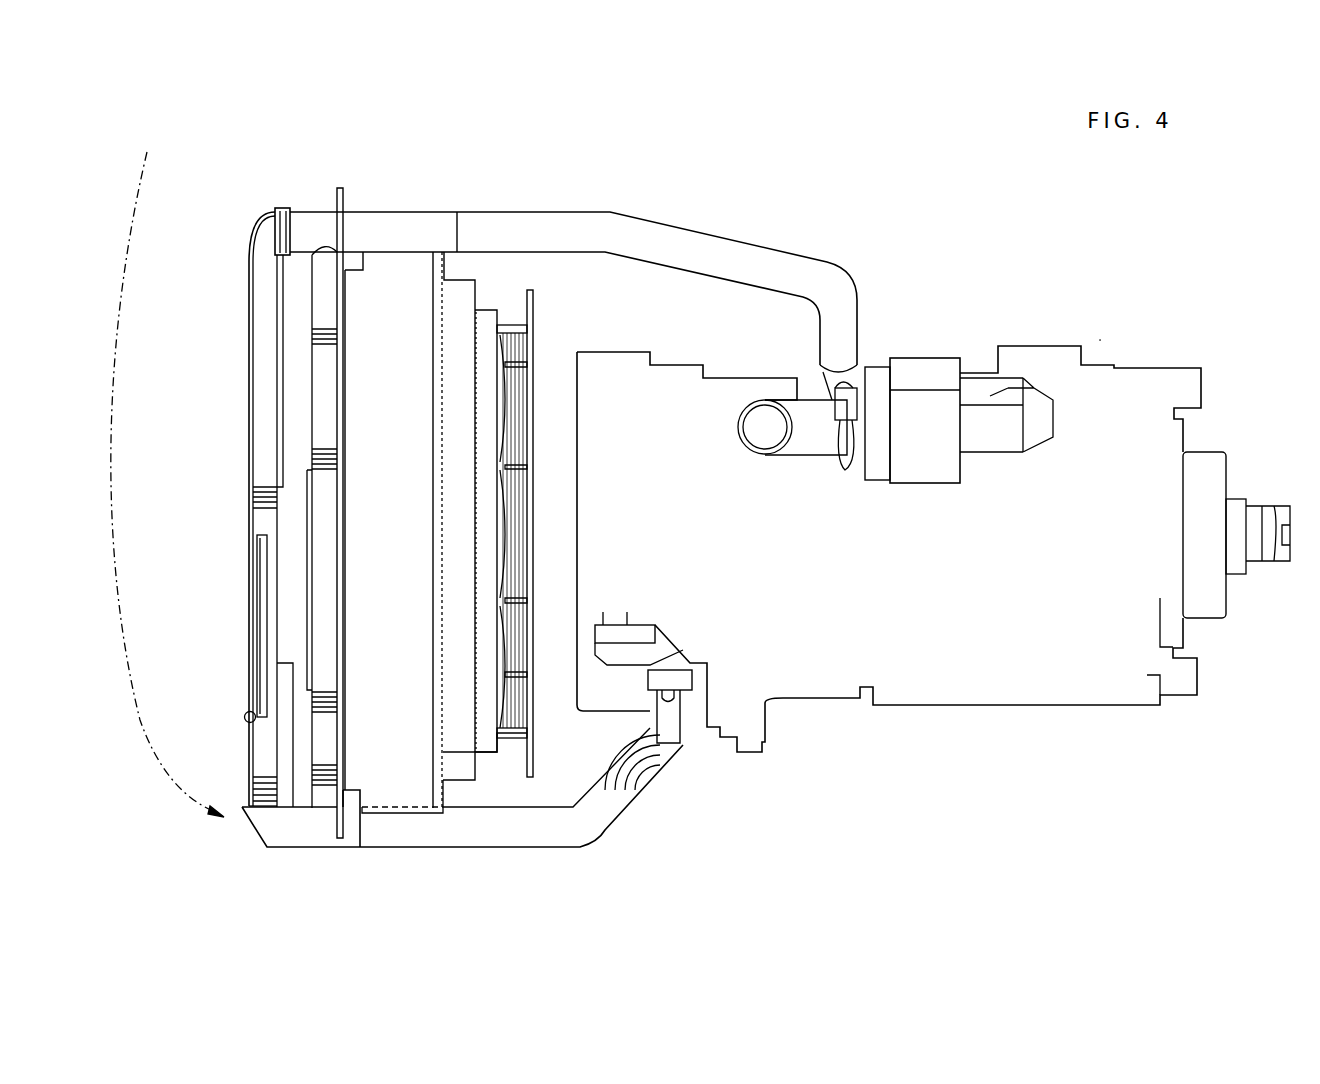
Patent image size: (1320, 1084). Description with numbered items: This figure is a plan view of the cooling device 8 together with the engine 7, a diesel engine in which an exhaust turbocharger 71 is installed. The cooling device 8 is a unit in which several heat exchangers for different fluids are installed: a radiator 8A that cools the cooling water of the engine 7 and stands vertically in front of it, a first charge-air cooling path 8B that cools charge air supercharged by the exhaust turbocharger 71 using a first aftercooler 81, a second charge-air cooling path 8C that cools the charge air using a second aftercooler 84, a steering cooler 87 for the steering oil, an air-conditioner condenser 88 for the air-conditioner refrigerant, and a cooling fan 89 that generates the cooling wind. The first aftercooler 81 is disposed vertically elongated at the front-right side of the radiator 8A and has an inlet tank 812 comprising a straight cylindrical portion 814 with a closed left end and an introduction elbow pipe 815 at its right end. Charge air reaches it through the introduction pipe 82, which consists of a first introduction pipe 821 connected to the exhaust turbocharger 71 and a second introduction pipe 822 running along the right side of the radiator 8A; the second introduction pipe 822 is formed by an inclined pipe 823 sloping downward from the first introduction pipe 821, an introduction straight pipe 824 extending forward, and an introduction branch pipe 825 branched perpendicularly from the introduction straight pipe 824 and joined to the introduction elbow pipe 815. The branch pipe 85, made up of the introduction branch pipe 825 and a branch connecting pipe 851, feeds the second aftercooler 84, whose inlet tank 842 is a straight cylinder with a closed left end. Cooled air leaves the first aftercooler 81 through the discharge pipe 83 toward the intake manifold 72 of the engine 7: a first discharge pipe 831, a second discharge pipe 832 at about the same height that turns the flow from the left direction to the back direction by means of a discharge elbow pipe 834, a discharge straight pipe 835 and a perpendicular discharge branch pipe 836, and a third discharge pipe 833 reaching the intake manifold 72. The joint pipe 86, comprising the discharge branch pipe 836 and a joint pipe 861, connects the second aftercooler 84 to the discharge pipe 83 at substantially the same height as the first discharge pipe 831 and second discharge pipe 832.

The engine 7 is at (1045, 346).
The exhaust turbocharger 71 is at (918, 357).
The intake manifold 72 is at (677, 748).
The cooling device 8 is at (656, 182).
The radiator 8A is at (437, 302).
The first charge-air cooling path 8B is at (510, 131).
The second charge-air cooling path 8C is at (446, 517).
The first aftercooler 81 is at (240, 263).
The inlet tank 812 is at (263, 447).
The cylindrical portion 814 is at (268, 531).
The introduction elbow pipe 815 is at (262, 213).
The introduction pipe 82 is at (545, 166).
The first introduction pipe 821 is at (532, 210).
The second introduction pipe 822 is at (444, 210).
The inclined pipe 823 is at (403, 210).
The introduction straight pipe 824 is at (310, 212).
The introduction branch pipe 825 is at (337, 292).
The discharge pipe 83 is at (167, 472).
The first discharge pipe 831 is at (248, 755).
The second discharge pipe 832 is at (195, 893).
The third discharge pipe 833 is at (507, 848).
The discharge elbow pipe 834 is at (250, 827).
The discharge straight pipe 835 is at (286, 838).
The discharge branch pipe 836 is at (320, 813).
The second aftercooler 84 is at (340, 502).
The inlet tank 842 is at (323, 562).
The branch pipe 85 is at (390, 285).
The branch connecting pipe 851 is at (338, 400).
The joint pipe 86 is at (390, 680).
The joint pipe 861 is at (338, 728).
The steering cooler 87 is at (277, 732).
The air-conditioner condenser 88 is at (257, 613).
The cooling fan 89 is at (543, 354).